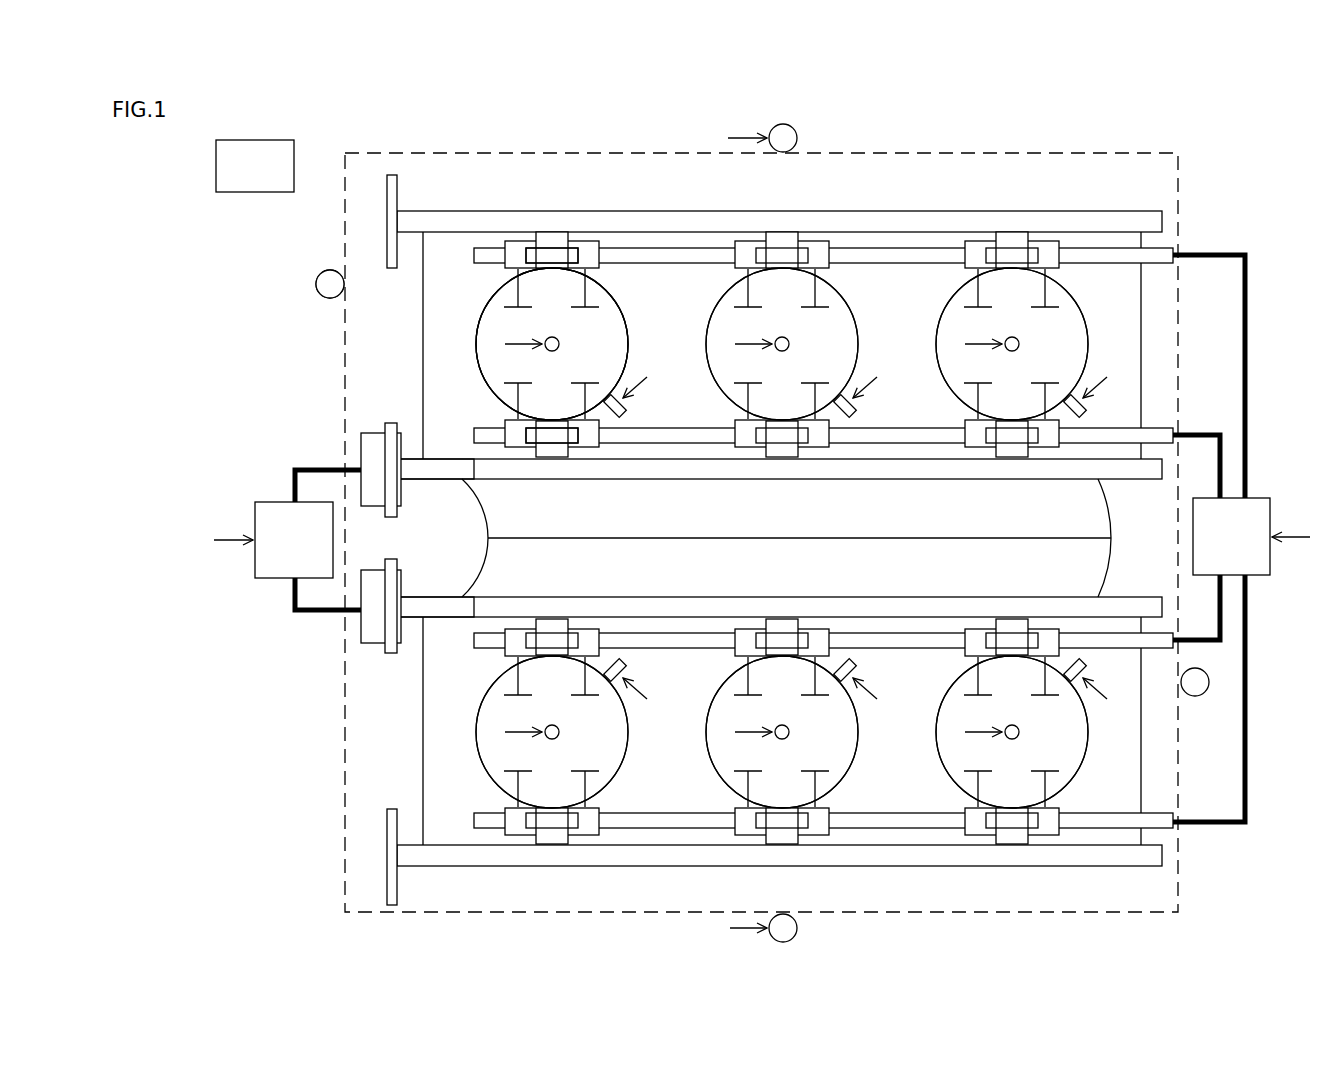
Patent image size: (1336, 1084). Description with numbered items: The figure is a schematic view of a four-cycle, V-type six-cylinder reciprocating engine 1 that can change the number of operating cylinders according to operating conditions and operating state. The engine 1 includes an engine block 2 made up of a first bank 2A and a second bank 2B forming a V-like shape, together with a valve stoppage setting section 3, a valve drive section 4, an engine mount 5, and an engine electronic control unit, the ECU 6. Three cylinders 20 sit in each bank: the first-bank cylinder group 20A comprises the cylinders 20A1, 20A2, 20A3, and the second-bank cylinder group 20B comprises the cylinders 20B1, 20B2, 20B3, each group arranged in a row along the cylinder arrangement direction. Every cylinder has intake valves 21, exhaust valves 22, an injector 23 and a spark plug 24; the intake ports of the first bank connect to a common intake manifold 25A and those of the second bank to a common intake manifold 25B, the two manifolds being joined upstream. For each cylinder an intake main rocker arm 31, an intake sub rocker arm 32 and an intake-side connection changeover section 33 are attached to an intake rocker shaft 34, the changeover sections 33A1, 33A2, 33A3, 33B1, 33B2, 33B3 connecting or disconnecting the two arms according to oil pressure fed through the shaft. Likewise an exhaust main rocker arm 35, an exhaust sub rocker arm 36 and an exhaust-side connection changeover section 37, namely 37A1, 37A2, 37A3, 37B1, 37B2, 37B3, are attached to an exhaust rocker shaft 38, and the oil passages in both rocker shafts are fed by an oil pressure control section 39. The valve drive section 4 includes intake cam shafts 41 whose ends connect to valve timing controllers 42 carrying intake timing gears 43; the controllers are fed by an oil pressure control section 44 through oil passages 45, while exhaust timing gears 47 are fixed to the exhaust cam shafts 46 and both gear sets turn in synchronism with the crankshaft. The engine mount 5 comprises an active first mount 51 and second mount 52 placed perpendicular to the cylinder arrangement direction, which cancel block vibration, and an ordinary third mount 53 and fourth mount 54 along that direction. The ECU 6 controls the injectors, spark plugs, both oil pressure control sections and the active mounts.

The reciprocating engine 1 is at (1286, 141).
The engine block 2 is at (1180, 190).
The first bank 2A is at (1138, 338).
The second bank 2B is at (1133, 737).
The valve stoppage setting section 3 is at (1265, 368).
The valve drive section 4 is at (271, 430).
The engine mount 5 is at (330, 284).
The engine electronic control unit 6 is at (294, 152).
The cylinder 20 is at (619, 303).
The first-bank cylinder group 20A is at (458, 350).
The second-bank cylinder group 20B is at (458, 733).
The cylinder 20A1 is at (596, 356).
The cylinder 20A2 is at (834, 356).
The cylinder 20A3 is at (1064, 356).
The cylinder 20B1 is at (594, 744).
The cylinder 20B2 is at (834, 744).
The cylinder 20B3 is at (1064, 744).
The intake valves 21 is at (507, 402).
The exhaust valves 22 is at (507, 292).
The injector 23 is at (1086, 405).
The spark plug 24 is at (1022, 341).
The intake manifold 25A is at (1100, 506).
The intake manifold 25B is at (1100, 566).
The intake main rocker arm 31 is at (517, 442).
The intake sub rocker arm 32 is at (552, 456).
The intake-side connection changeover section 33 is at (552, 435).
The intake-side connection changeover section 33A1 is at (574, 437).
The intake-side connection changeover section 33A2 is at (786, 445).
The intake-side connection changeover section 33A3 is at (1013, 445).
The intake-side connection changeover section 33B1 is at (553, 640).
The intake-side connection changeover section 33B2 is at (786, 630).
The intake-side connection changeover section 33B3 is at (1013, 630).
The intake rocker shaft 34 is at (897, 480).
The exhaust main rocker arm 35 is at (514, 250).
The exhaust sub rocker arm 36 is at (548, 240).
The exhaust-side connection changeover section 37 is at (552, 255).
The exhaust-side connection changeover section 37A1 is at (584, 254).
The exhaust-side connection changeover section 37A2 is at (786, 252).
The exhaust-side connection changeover section 37A3 is at (1014, 252).
The exhaust-side connection changeover section 37B1 is at (552, 825).
The exhaust-side connection changeover section 37B2 is at (782, 838).
The exhaust-side connection changeover section 37B3 is at (1012, 838).
The exhaust rocker shaft 38 is at (901, 253).
The oil pressure control section 39 is at (1266, 513).
The intake cam shaft 41 is at (434, 477).
The valve timing controller 42 is at (362, 451).
The intake timing gear 43 is at (391, 423).
The oil pressure control section 44 is at (265, 579).
The oil passages 45 is at (292, 477).
The exhaust cam shaft 46 is at (1124, 218).
The exhaust timing gear 47 is at (386, 887).
The first mount 51 is at (797, 135).
The second mount 52 is at (797, 928).
The third mount 53 is at (316, 285).
The fourth mount 54 is at (1210, 681).